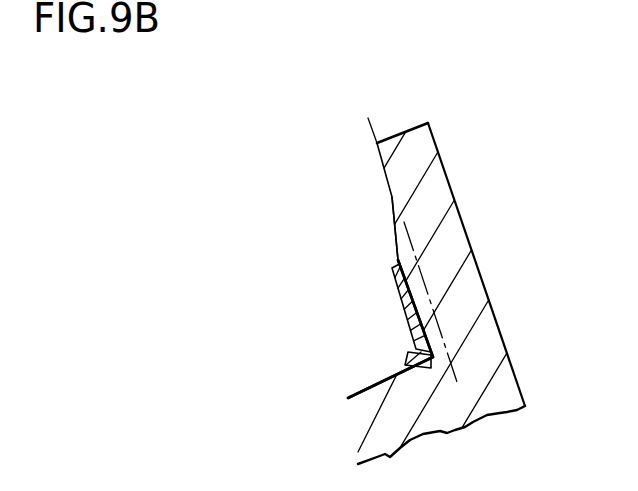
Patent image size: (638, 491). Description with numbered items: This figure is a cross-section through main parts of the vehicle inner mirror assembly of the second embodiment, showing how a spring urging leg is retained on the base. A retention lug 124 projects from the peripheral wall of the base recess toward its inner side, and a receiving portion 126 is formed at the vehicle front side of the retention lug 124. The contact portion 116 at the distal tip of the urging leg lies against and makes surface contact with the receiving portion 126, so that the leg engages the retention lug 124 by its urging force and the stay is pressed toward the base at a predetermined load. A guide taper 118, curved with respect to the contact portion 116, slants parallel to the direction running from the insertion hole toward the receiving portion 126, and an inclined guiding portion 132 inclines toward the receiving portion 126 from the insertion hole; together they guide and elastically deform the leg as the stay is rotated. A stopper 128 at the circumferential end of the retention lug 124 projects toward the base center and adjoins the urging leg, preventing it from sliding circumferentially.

The inclined guiding portion 132 is at (393, 201).
The retention lug 124 is at (397, 254).
The receiving portion 126 is at (396, 293).
The contact portion 116 is at (406, 323).
The guide taper 118 is at (407, 350).
The stopper 128 is at (375, 403).